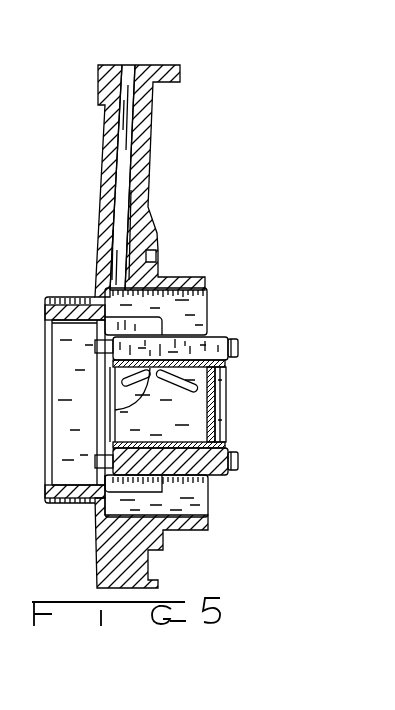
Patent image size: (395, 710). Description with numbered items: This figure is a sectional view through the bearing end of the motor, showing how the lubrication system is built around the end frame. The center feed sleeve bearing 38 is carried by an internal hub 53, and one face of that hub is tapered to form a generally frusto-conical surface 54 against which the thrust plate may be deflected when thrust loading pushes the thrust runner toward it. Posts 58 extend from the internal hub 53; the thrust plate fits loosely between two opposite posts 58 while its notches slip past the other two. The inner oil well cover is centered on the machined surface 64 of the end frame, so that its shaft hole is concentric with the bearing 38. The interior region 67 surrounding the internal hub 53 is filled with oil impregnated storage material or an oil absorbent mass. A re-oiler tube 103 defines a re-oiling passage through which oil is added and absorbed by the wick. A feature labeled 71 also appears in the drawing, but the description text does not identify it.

The re-oiler tube 103 is at (133, 72).
The machined surface 64 is at (190, 277).
The interior region 67 is at (190, 313).
The internal hub 53 is at (213, 347).
The posts 58 is at (240, 347).
The frusto-conical surface 54 is at (214, 366).
The sleeve bearing 38 is at (192, 412).
The spring pin 71 is at (115, 412).